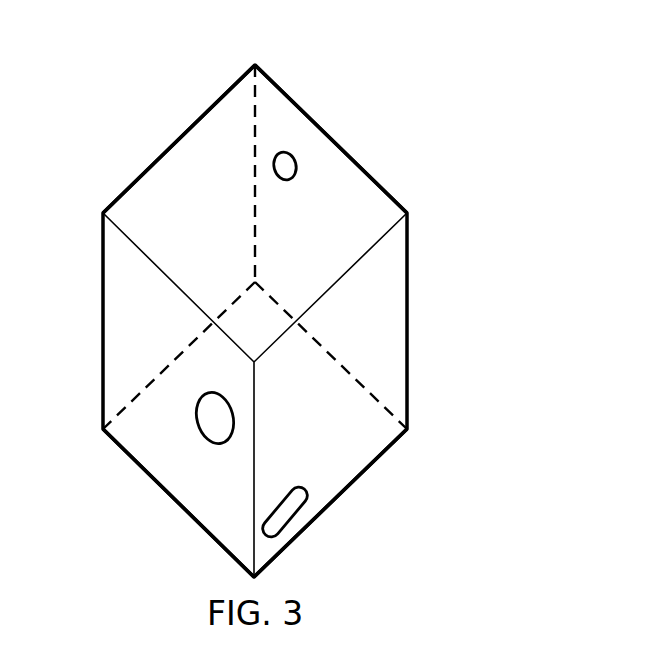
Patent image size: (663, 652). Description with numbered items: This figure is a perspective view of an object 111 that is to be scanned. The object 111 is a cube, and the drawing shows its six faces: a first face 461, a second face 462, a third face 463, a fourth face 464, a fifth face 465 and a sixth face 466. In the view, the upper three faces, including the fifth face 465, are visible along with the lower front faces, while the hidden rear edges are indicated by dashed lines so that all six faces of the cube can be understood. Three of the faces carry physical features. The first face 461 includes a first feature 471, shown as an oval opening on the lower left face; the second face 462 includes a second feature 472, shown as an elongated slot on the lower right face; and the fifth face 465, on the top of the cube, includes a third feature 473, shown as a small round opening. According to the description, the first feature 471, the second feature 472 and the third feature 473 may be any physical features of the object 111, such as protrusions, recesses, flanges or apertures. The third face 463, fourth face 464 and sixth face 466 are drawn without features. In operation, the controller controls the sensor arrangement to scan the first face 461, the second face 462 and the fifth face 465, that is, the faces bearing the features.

The object 111 is at (383, 64).
The first face 461 is at (182, 467).
The second face 462 is at (353, 443).
The third face 463 is at (362, 163).
The fourth face 464 is at (158, 157).
The fifth face 465 is at (255, 213).
The sixth face 466 is at (330, 395).
The first feature 471 is at (197, 423).
The second feature 472 is at (284, 513).
The third feature 473 is at (283, 151).